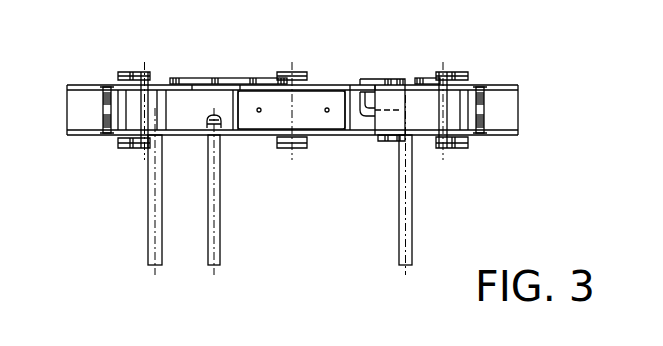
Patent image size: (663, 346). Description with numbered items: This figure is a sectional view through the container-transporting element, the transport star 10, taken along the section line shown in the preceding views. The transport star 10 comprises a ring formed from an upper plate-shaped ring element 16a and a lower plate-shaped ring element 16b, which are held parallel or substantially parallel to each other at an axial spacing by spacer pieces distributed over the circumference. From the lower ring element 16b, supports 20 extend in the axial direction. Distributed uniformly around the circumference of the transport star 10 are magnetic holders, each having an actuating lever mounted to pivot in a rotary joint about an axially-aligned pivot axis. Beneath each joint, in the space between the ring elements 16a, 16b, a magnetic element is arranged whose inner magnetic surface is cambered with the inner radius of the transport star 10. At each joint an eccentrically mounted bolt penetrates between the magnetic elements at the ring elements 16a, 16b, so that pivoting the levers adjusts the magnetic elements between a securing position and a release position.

The transport star 10 is at (553, 133).
The upper ring element 16a is at (327, 88).
The lower ring element 16b is at (352, 133).
The supports 20 is at (400, 225).